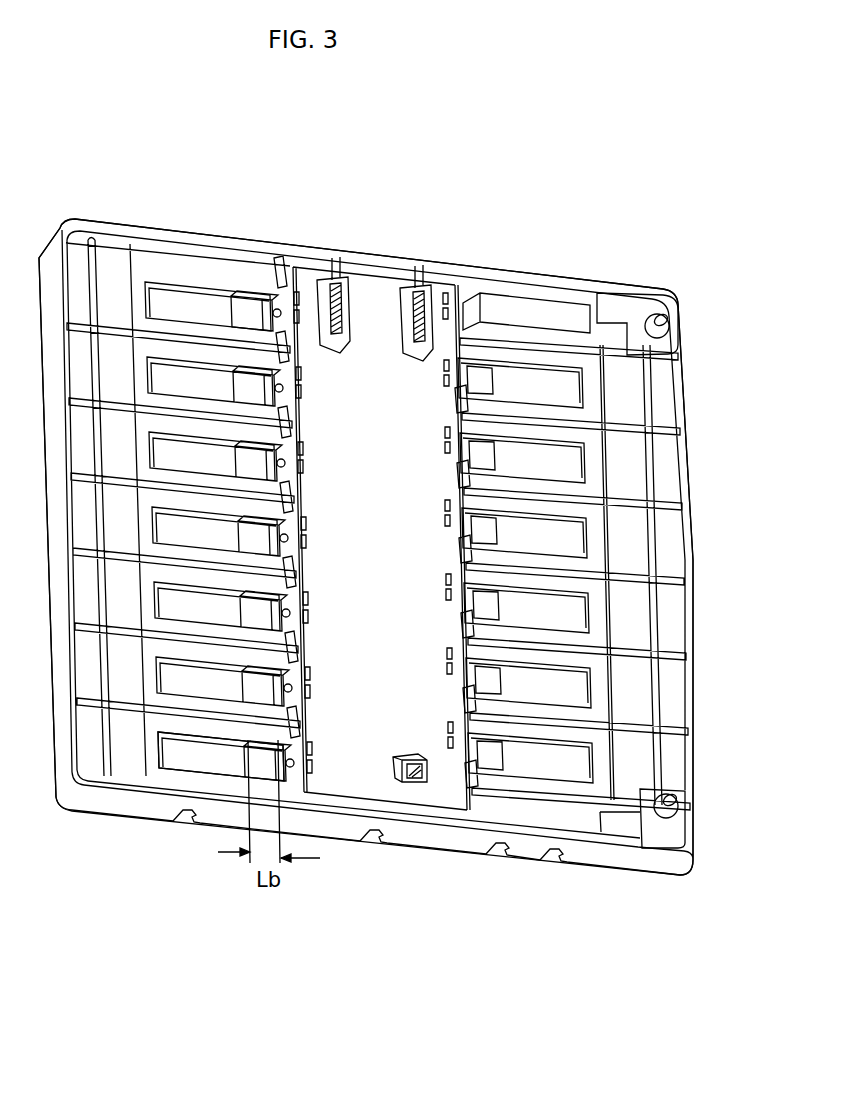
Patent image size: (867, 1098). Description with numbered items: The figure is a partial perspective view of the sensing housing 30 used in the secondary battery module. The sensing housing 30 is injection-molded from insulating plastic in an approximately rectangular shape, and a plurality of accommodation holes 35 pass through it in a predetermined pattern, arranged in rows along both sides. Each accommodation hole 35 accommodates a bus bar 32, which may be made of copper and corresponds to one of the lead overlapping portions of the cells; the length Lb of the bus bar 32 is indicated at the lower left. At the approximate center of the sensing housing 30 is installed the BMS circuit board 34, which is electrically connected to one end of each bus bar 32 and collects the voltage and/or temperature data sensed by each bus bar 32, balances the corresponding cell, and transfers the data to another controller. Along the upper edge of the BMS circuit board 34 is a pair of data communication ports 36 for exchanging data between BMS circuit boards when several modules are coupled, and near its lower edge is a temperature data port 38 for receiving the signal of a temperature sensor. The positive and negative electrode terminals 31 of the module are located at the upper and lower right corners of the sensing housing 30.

The sensing housing 30 is at (690, 260).
The positive electrode terminal and negative electrode terminal 31 is at (645, 830).
The bus bar 32 is at (247, 312).
The BMS circuit board 34 is at (340, 768).
The accommodation hole 35 is at (700, 402).
The data communication port 36 is at (417, 288).
The temperature data port 38 is at (423, 783).